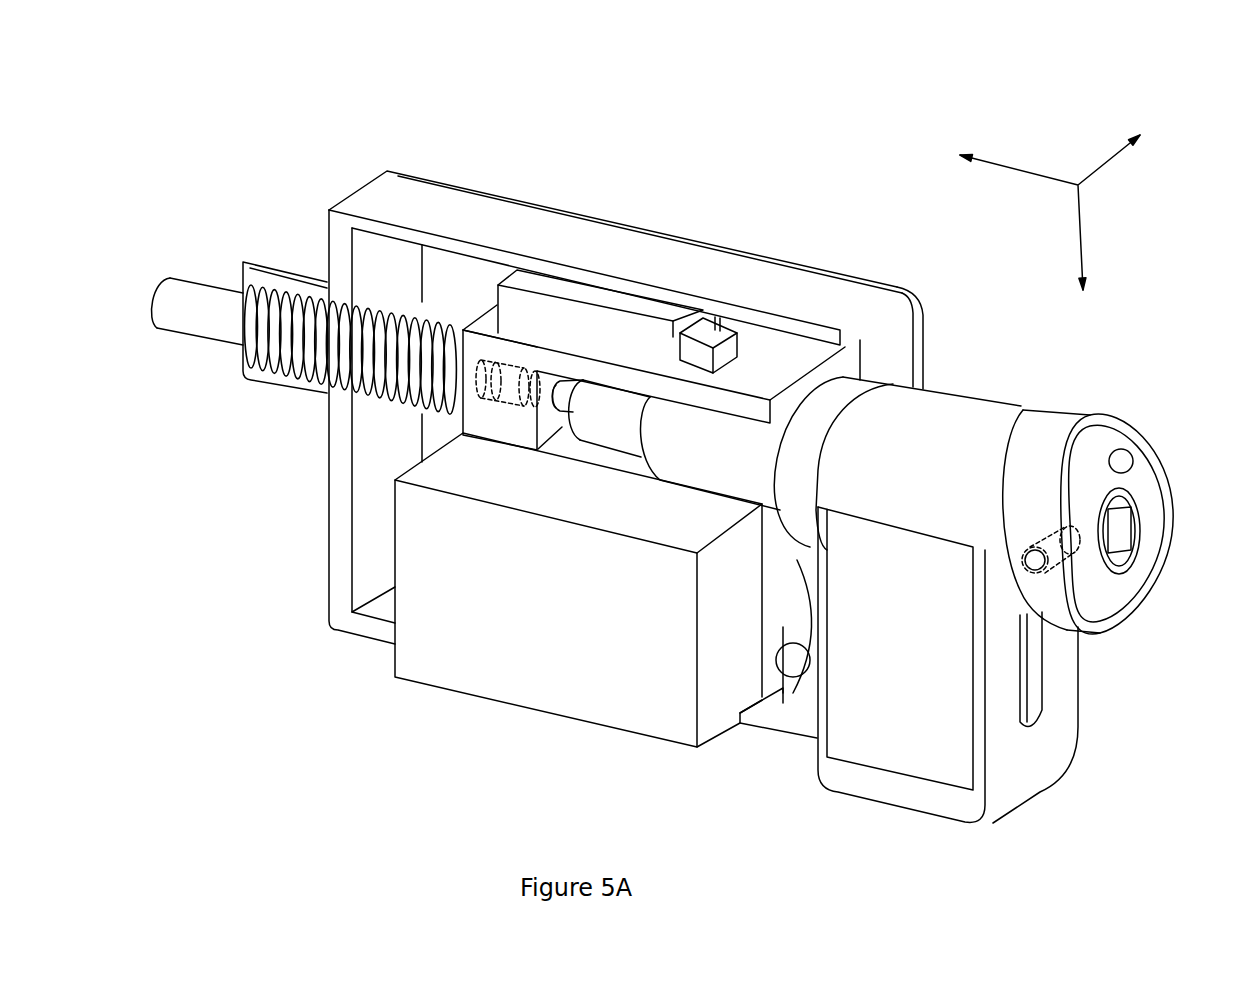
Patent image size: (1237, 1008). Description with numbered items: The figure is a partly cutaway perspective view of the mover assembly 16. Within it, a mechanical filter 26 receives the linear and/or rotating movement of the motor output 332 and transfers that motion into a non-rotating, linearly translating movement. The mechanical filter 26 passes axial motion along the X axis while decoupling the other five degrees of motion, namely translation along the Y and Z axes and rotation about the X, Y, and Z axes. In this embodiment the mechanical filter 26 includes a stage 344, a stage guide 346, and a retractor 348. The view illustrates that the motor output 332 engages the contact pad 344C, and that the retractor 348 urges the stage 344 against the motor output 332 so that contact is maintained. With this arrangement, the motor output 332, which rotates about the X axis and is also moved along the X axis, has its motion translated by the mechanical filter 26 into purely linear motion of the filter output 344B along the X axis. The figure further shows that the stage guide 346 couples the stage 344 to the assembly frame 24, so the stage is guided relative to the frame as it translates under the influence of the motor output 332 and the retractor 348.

The mover assembly 16 is at (833, 240).
The assembly frame 24 is at (840, 303).
The mechanical filter 26 is at (767, 357).
The motor output 332 is at (554, 404).
The stage 344 is at (527, 360).
The filter output 344B is at (192, 302).
The contact pad 344C is at (545, 430).
The stage guide 346 is at (652, 302).
The retractor 348 is at (335, 373).